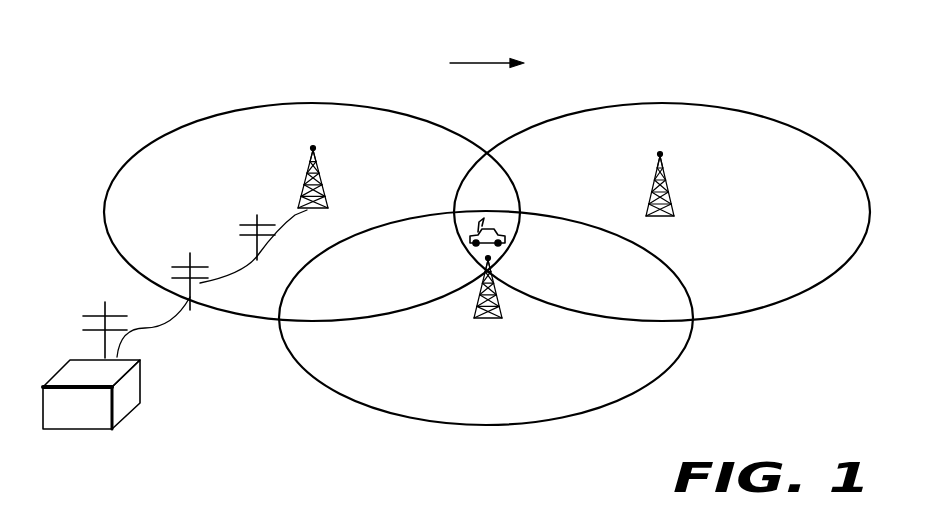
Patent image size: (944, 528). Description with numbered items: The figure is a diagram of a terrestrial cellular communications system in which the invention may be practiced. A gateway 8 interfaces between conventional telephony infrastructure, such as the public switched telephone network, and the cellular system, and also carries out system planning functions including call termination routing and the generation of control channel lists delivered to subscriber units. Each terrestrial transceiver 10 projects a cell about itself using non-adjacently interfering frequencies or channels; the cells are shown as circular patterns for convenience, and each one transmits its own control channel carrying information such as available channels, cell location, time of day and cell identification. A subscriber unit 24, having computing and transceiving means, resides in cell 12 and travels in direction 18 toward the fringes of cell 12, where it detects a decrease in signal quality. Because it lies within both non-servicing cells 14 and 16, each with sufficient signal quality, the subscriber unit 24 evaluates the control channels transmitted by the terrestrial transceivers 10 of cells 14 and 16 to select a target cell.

The gateway 8 is at (70, 372).
The terrestrial transceiver 10 is at (313, 148).
The cell 12 is at (228, 127).
The non-servicing cell 14 is at (417, 403).
The non-servicing cell 16 is at (777, 288).
The direction 18 is at (478, 62).
The subscriber unit 24 is at (505, 240).